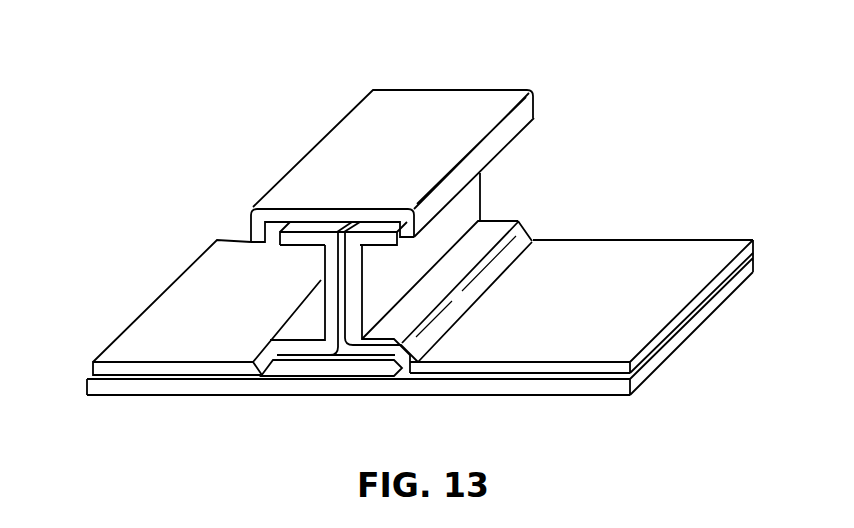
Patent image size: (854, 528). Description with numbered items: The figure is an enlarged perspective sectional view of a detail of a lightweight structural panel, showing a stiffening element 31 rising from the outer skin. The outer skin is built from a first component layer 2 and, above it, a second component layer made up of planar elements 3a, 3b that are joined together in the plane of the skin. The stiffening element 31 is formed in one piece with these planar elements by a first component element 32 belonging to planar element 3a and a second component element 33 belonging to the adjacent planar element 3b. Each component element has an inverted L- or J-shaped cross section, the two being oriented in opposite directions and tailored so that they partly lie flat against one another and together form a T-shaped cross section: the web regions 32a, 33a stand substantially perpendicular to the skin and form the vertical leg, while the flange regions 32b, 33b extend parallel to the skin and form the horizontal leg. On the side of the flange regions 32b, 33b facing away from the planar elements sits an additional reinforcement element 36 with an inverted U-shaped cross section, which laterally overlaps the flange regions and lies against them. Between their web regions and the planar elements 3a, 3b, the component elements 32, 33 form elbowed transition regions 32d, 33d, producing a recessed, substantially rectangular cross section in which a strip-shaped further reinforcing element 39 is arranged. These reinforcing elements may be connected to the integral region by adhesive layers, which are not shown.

The first component layer 2 is at (552, 387).
The planar element 3a is at (685, 257).
The planar element 3b is at (235, 251).
The stiffening element 31 is at (597, 104).
The first component element 32 is at (490, 197).
The web region 32a is at (466, 217).
The flange region 32b is at (380, 237).
The elbowed transition region 32d is at (488, 238).
The second component element 33 is at (308, 275).
The web region 33a is at (332, 307).
The flange region 33b is at (302, 238).
The elbowed transition region 33d is at (275, 356).
The reinforcement element 36 is at (468, 103).
The reinforcing element 39 is at (326, 367).